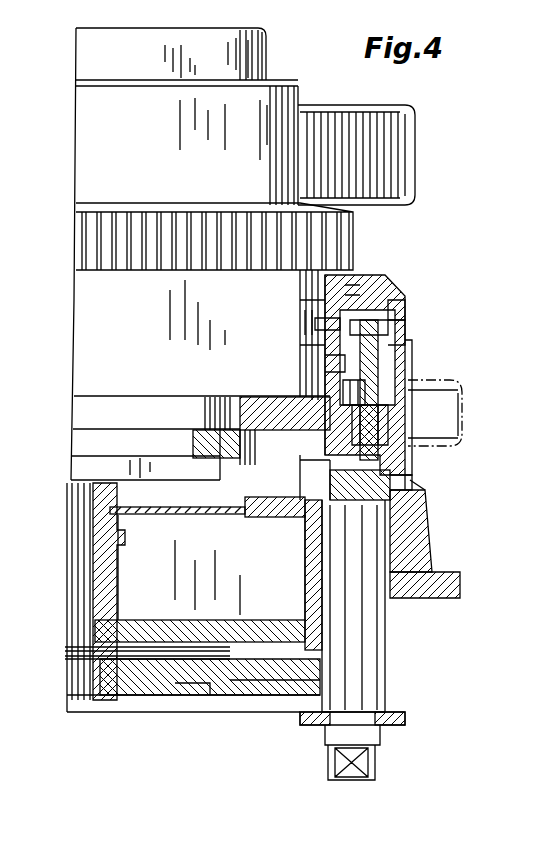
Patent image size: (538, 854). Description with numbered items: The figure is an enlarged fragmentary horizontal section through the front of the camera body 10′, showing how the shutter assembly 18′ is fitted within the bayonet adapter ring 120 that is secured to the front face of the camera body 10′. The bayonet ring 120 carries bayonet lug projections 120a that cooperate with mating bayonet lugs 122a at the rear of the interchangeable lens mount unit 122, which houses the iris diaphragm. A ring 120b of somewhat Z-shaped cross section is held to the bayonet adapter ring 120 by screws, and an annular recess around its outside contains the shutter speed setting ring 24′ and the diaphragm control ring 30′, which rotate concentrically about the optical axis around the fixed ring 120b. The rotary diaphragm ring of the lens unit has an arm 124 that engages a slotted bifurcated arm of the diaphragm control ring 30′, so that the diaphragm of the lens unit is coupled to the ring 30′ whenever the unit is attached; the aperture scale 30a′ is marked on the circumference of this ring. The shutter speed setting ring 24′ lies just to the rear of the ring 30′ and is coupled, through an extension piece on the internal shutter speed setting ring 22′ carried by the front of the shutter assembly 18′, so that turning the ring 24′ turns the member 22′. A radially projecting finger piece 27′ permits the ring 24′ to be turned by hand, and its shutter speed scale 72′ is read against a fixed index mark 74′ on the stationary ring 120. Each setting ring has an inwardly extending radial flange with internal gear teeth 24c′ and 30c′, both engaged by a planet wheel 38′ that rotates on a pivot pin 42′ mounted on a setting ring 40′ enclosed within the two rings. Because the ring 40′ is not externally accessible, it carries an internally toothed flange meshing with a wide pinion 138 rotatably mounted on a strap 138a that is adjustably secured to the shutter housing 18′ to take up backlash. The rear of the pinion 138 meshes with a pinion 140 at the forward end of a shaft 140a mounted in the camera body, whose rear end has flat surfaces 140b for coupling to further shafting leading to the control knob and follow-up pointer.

The interchangeable lens mount unit 122 is at (80, 117).
The ring of Z-shaped cross section 120b is at (355, 268).
The gear teeth 30c′ is at (365, 300).
The diaphragm control ring 30′ is at (400, 315).
The diaphragm aperture scale 30a′ is at (405, 336).
The arm 124 is at (312, 333).
The setting wheel or ring 40′ is at (332, 363).
The pivot pin 42′ is at (345, 392).
The planet wheel 38′ is at (400, 362).
The gear teeth 24c′ is at (385, 432).
The shutter speed setting ring 24′ is at (408, 378).
The finger piece 27′ is at (466, 395).
The shutter speed scale 72′ is at (408, 415).
The pinion 140 is at (412, 476).
The fixed reference point or index mark 74′ is at (418, 497).
The bayonet adapter ring 120 is at (410, 549).
The camera body 10′ is at (445, 600).
The bayonet lug projections 120a is at (200, 428).
The wide pinion 138 is at (232, 428).
The bayonet lugs 122a is at (208, 478).
The shutter speed setting ring 22′ is at (148, 515).
The strap 138a is at (293, 520).
The shutter assembly 18′ is at (310, 583).
The shaft 140a is at (388, 665).
The flat surfaces 140b is at (352, 780).